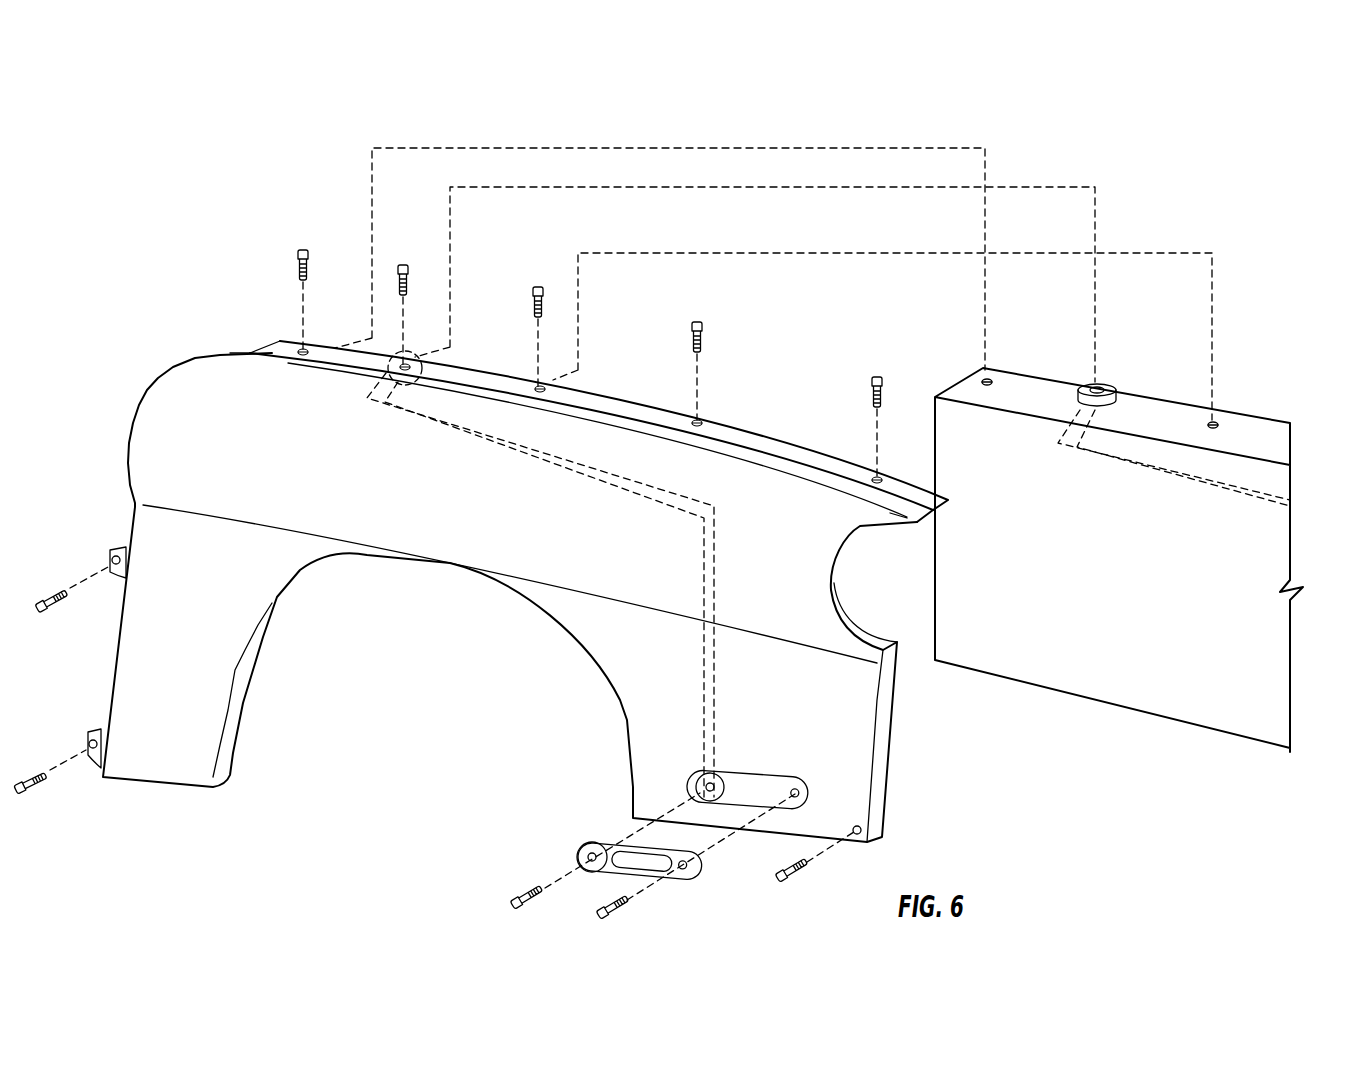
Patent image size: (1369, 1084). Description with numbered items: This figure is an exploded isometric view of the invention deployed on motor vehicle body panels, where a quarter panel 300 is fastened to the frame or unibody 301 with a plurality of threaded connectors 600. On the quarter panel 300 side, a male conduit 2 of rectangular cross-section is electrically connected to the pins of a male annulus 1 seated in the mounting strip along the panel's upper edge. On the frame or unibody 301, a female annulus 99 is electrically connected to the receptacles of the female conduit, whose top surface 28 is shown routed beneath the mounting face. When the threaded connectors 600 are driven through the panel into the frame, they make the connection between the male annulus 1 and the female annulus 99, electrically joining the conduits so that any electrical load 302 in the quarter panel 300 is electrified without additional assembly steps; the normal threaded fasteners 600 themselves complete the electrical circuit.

The threaded connectors 600 is at (539, 286).
The male annulus 1 is at (420, 364).
The male conduit 2 is at (582, 462).
The quarter panel 300 is at (180, 427).
The female annulus 99 is at (590, 855).
The top surface 28 is at (1237, 483).
The frame or unibody 301 is at (1250, 690).
The electrical load 302 is at (689, 882).